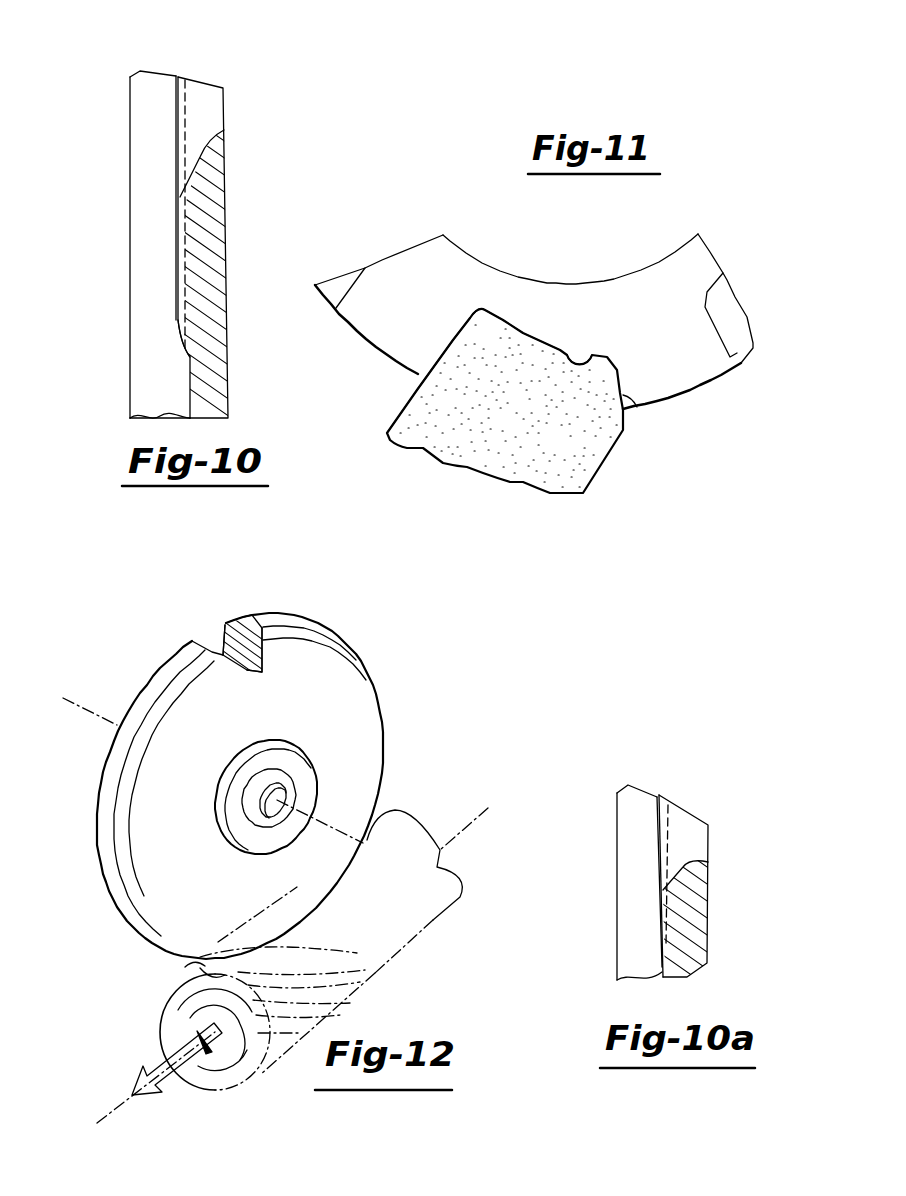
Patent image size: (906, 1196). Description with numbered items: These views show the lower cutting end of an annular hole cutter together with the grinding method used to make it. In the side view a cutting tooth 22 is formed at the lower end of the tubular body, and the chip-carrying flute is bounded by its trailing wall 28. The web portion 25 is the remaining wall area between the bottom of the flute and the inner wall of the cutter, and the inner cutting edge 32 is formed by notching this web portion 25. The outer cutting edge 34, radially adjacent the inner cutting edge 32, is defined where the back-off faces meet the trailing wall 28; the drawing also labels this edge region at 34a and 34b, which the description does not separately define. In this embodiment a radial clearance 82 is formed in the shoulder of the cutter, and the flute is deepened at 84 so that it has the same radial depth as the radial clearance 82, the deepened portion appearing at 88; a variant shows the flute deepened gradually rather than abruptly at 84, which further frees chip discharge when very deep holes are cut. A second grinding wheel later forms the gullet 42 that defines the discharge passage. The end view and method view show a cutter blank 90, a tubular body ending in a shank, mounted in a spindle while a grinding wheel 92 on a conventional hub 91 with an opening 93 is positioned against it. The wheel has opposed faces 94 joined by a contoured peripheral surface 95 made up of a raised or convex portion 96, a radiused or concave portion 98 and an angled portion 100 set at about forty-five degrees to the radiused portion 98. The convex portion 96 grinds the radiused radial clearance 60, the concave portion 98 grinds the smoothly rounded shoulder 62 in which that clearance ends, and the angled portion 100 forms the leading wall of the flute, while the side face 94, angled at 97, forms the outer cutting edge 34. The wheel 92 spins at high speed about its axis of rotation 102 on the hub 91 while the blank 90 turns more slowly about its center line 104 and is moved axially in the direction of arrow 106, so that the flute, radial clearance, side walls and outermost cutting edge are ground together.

In FIG. 10, the cutting teeth 22 is at (175, 230).
In FIG. 10A, the cutting teeth 22 is at (662, 888).
In FIG. 10, the web portion 25 is at (220, 245).
In FIG. 11, the web portion 25 is at (657, 307).
In FIG. 10A, the web portion 25 is at (710, 907).
In FIG. 10, the trailing wall 28 is at (148, 285).
In FIG. 10, the inner cutting edge 32 is at (222, 88).
In FIG. 10A, the inner cutting edge 32 is at (685, 806).
In FIG. 11, the outer cutting edge 34 is at (453, 340).
In FIG. 12, the outer cutting edge 34 is at (188, 967).
In FIG. 10, the first cutting edge 34a is at (130, 72).
In FIG. 10A, the first cutting edge 34a is at (617, 793).
In FIG. 10, the second cutting edge 34b is at (158, 72).
In FIG. 10A, the second cutting edge 34b is at (650, 790).
In FIG. 10, the gullet 42 is at (200, 152).
In FIG. 10A, the gullet 42 is at (685, 866).
In FIG. 11, the radial clearance 60 is at (487, 310).
In FIG. 12, the radial clearance 60 is at (168, 995).
In FIG. 11, the shoulder 62 is at (510, 323).
In FIG. 10, the radial clearance 82 is at (190, 110).
In FIG. 10, the flute deepening 84 is at (195, 352).
In FIG. 10, the deepened portion of flute 88 is at (190, 395).
In FIG. 10A, the deepened portion of flute 88 is at (662, 952).
In FIG. 11, the cutter blank 90 is at (713, 355).
In FIG. 12, the cutter blank 90 is at (408, 910).
In FIG. 12, the hub 91 is at (300, 773).
In FIG. 12, the grinding wheel 92 is at (360, 713).
In FIG. 12, the opening 93 is at (270, 808).
In FIG. 11, the opposed faces 94 is at (402, 410).
In FIG. 12, the opposed faces 94 is at (318, 697).
In FIG. 12, the peripheral surface 95 is at (97, 838).
In FIG. 11, the raised or convex portion 96 is at (473, 310).
In FIG. 12, the raised or convex portion 96 is at (260, 620).
In FIG. 11, the side face angle 97 is at (437, 353).
In FIG. 11, the radiused or concave portion 98 is at (580, 363).
In FIG. 12, the radiused or concave portion 98 is at (249, 615).
In FIG. 11, the angled portion 100 is at (637, 405).
In FIG. 12, the angled portion 100 is at (228, 630).
In FIG. 12, the axis of rotation 102 is at (63, 698).
In FIG. 12, the center line 104 is at (470, 823).
In FIG. 12, the arrow 106 is at (155, 1070).